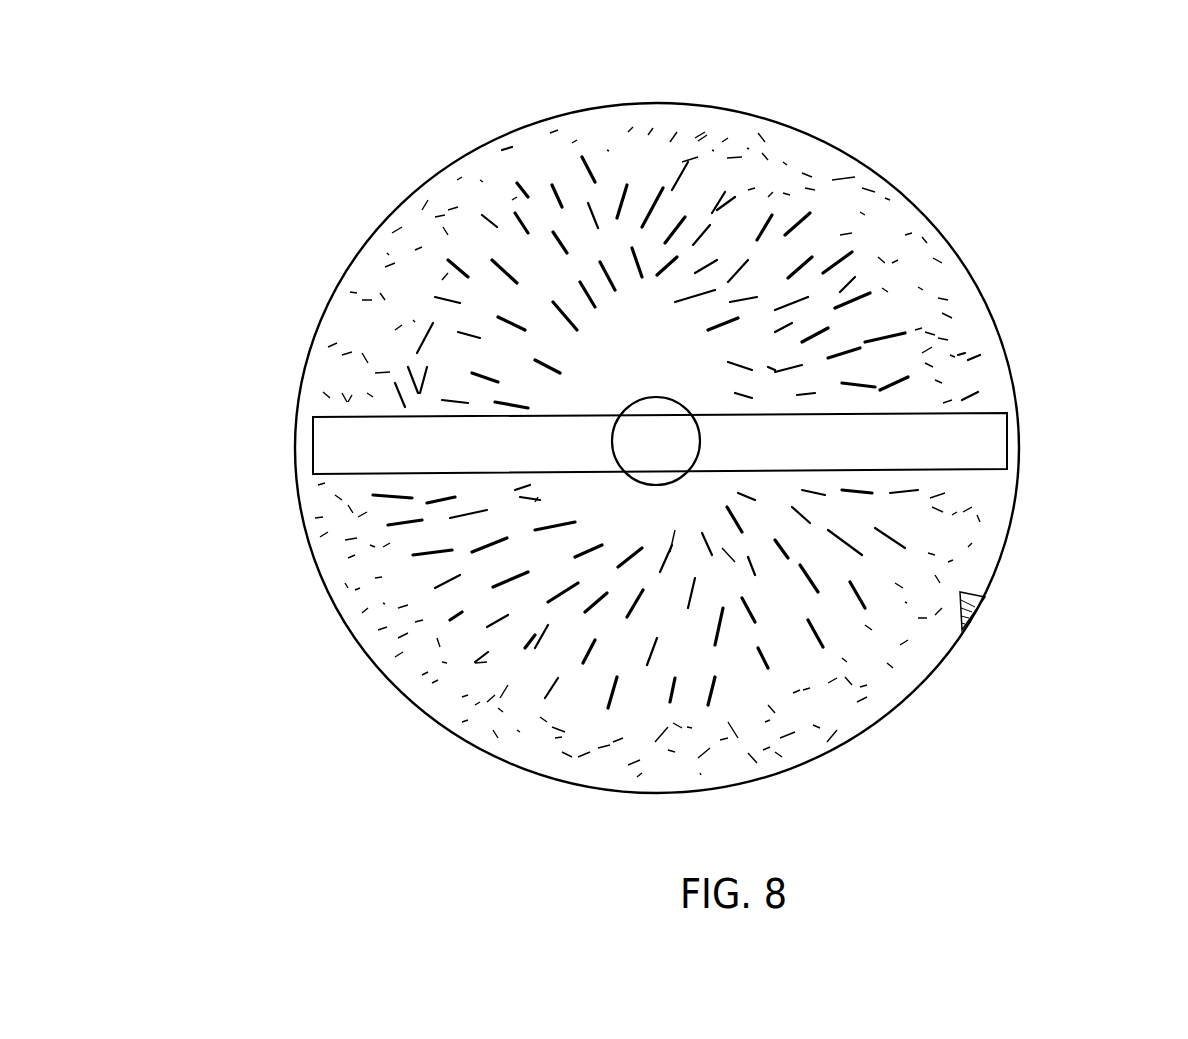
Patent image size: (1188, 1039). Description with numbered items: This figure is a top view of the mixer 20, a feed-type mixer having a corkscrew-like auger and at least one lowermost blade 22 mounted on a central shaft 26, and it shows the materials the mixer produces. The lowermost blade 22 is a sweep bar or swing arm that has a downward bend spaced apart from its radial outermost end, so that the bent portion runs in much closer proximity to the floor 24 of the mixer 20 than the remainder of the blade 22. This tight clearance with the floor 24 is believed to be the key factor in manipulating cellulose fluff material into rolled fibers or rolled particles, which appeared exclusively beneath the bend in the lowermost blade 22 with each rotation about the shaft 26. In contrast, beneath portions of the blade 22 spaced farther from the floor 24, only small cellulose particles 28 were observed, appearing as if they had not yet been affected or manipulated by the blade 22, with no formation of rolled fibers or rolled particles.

The mixer 20 is at (340, 709).
The lowermost blade 22 is at (803, 433).
The floor 24 is at (605, 125).
The shaft 26 is at (648, 455).
The cellulose particles 28 is at (975, 602).